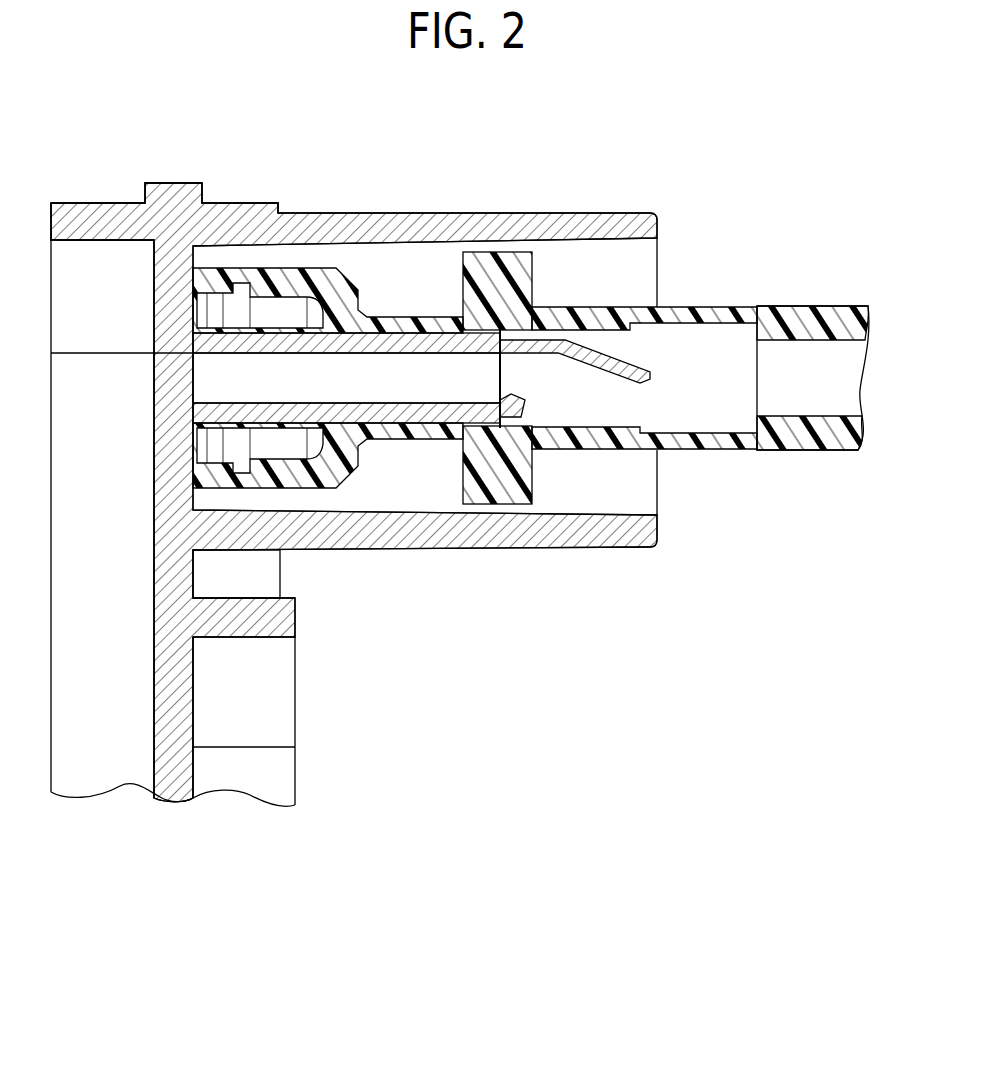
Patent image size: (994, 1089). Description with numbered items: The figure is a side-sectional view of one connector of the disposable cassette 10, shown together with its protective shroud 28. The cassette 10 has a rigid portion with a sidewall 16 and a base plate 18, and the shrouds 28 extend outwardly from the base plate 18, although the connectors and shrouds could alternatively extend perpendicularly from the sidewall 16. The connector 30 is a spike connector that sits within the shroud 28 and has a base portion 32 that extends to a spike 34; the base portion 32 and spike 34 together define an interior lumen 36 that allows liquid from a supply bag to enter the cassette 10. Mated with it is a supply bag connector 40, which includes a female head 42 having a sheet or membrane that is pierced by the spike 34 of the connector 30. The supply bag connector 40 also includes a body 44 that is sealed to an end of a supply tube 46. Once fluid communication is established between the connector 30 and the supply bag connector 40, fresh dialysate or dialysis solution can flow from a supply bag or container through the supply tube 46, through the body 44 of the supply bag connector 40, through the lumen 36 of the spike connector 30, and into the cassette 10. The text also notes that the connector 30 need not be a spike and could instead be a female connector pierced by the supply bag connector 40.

The cassette 10 is at (176, 108).
The sidewall 16 is at (104, 222).
The base plate 18 is at (174, 793).
The shroud 28 is at (653, 530).
The connector 30 is at (196, 422).
The base portion 32 is at (350, 415).
The spike 34 is at (607, 353).
The interior lumen 36 is at (434, 368).
The supply bag connector 40 is at (494, 244).
The female head 42 is at (258, 266).
The body 44 is at (547, 427).
The supply tube 46 is at (792, 333).